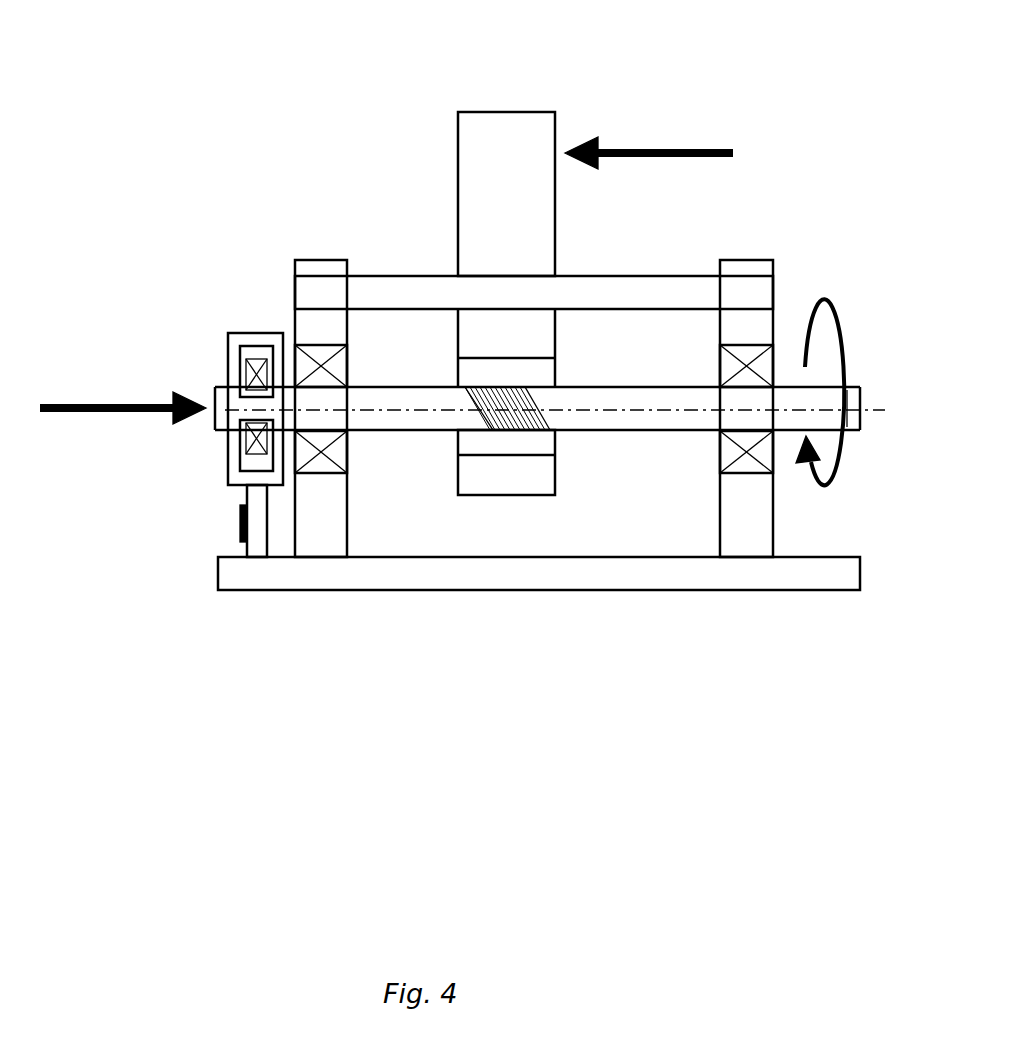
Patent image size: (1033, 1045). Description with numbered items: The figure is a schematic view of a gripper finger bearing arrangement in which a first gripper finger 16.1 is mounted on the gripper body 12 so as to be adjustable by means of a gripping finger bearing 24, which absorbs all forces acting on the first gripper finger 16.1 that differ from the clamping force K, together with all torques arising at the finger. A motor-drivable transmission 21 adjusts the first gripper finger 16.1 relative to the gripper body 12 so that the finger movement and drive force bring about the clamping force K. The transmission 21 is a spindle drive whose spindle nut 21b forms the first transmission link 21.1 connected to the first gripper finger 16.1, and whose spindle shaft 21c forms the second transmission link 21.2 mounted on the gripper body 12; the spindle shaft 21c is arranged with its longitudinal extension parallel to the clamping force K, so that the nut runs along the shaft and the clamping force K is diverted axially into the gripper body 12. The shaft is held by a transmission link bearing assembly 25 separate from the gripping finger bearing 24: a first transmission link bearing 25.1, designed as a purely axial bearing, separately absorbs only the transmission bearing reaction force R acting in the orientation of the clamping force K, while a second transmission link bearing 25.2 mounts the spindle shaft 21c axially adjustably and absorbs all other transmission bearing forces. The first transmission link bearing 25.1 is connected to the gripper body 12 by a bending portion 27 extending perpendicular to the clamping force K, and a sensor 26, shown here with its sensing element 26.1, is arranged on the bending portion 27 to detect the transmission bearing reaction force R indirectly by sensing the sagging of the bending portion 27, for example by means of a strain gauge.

The gripper body 12 is at (468, 578).
The first gripper finger 16.1 is at (510, 128).
The transmission 21 is at (537, 429).
The first transmission link 21.1 is at (587, 383).
The spindle nut 21b is at (533, 374).
The second transmission link 21.2 is at (537, 467).
The spindle shaft 21c is at (400, 420).
The gripping finger bearing 24 is at (582, 266).
The transmission link bearing assembly 25 is at (518, 304).
The first transmission link bearing 25.1 is at (253, 333).
The second transmission link bearing 25.2 is at (338, 369).
The sensor 26 is at (182, 532).
The sensor element 26.1 is at (240, 528).
The bending portion 27 is at (257, 530).
The clamping force K is at (654, 148).
The transmission bearing reaction force R is at (107, 405).